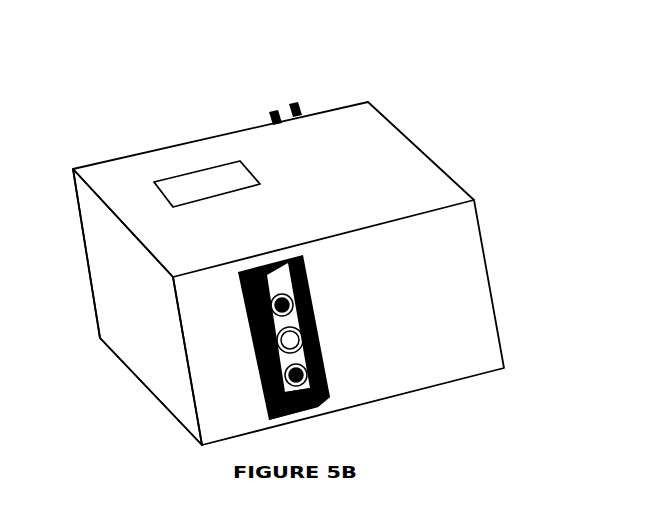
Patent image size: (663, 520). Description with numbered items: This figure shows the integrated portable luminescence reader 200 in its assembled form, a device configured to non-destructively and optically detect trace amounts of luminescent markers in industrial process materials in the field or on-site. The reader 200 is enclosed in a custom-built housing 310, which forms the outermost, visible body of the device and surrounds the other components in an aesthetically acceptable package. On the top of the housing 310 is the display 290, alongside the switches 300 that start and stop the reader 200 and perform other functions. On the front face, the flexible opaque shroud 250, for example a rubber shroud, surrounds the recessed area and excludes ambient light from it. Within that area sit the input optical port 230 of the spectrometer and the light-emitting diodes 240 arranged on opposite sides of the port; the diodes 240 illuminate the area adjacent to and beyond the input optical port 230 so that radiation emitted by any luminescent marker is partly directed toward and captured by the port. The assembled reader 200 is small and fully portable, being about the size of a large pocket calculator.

The integrated portable luminescence reader 200 is at (482, 93).
The input optical port 230 is at (255, 332).
The light-emitting diodes 240 is at (322, 347).
The flexible opaque shroud 250 is at (265, 383).
The display 290 is at (187, 185).
The switches 300 is at (265, 105).
The housing 310 is at (118, 270).